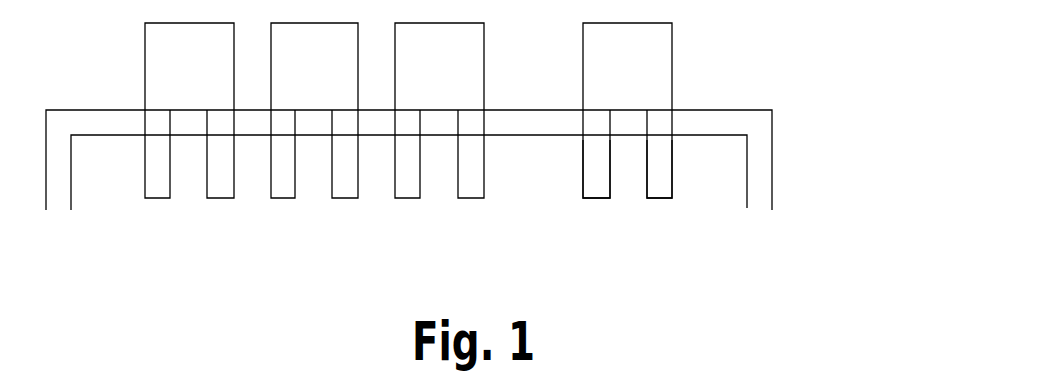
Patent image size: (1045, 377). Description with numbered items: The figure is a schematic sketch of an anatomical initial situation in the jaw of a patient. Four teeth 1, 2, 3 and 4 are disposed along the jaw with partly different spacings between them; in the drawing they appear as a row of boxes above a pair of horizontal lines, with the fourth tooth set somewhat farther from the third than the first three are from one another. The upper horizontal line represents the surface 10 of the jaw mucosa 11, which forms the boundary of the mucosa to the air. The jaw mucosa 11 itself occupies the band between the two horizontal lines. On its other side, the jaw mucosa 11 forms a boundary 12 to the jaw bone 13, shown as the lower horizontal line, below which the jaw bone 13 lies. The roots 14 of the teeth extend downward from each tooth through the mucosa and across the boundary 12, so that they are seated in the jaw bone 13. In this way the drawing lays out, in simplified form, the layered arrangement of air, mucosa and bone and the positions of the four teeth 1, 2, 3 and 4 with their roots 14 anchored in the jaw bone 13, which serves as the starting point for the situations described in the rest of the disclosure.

The tooth 1 is at (189, 110).
The tooth 2 is at (314, 110).
The tooth 3 is at (439, 110).
The tooth 4 is at (627, 110).
The surface of the jaw mucosa 10 is at (766, 112).
The jaw mucosa 11 is at (760, 125).
The boundary 12 is at (747, 147).
The jaw bone 13 is at (724, 165).
The roots 14 is at (597, 183).